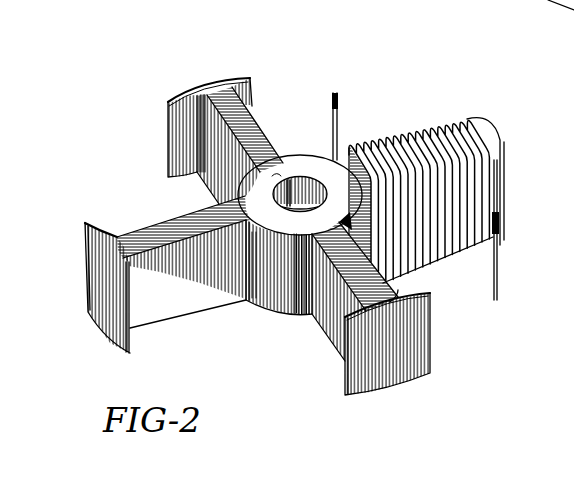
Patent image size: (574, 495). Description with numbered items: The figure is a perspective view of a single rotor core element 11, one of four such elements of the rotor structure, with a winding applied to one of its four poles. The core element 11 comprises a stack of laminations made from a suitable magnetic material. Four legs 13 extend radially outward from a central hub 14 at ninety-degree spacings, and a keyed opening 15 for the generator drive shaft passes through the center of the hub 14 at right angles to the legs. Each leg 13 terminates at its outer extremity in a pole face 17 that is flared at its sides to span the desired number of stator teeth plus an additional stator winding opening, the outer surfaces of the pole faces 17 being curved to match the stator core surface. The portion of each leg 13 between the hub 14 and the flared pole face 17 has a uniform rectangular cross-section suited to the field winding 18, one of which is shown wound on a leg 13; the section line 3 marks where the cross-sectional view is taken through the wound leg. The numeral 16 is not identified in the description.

The rotor core element 11 is at (135, 140).
The leg 13 is at (257, 137).
The hub 14 is at (277, 297).
The keyed opening 15 is at (312, 183).
The hub 16 is at (278, 175).
The pole face 17 is at (230, 70).
The field winding 18 is at (428, 122).
The section line of FIG. 3 is at (527, 183).